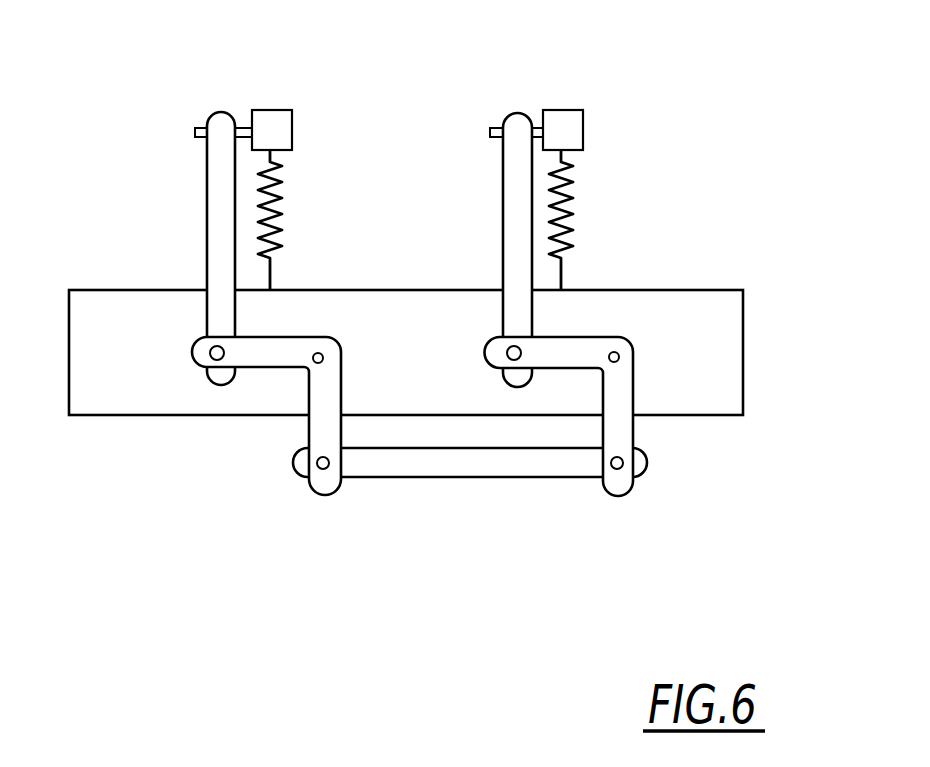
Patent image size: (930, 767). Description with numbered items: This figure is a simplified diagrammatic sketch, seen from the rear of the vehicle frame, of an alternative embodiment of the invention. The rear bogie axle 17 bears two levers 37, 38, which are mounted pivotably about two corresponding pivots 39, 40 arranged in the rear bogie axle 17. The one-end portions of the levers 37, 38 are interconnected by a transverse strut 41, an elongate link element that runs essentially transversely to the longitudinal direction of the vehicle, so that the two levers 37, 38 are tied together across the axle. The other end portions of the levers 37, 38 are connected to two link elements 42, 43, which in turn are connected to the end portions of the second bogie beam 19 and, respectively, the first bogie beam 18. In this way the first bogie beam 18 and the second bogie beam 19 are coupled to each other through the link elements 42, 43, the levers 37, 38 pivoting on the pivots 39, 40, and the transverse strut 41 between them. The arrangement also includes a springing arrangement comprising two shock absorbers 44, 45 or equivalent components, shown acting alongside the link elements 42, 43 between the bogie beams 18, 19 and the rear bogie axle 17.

The rear bogie axle 17 is at (117, 303).
The first bogie beam 18 is at (560, 125).
The second bogie beam 19 is at (268, 120).
The lever 37 is at (250, 358).
The lever 38 is at (575, 357).
The pivot 39 is at (305, 370).
The pivot 40 is at (633, 347).
The transverse strut 41 is at (423, 468).
The link element 42 is at (215, 177).
The link element 43 is at (515, 180).
The shock absorber 44 is at (283, 190).
The shock absorber 45 is at (575, 202).